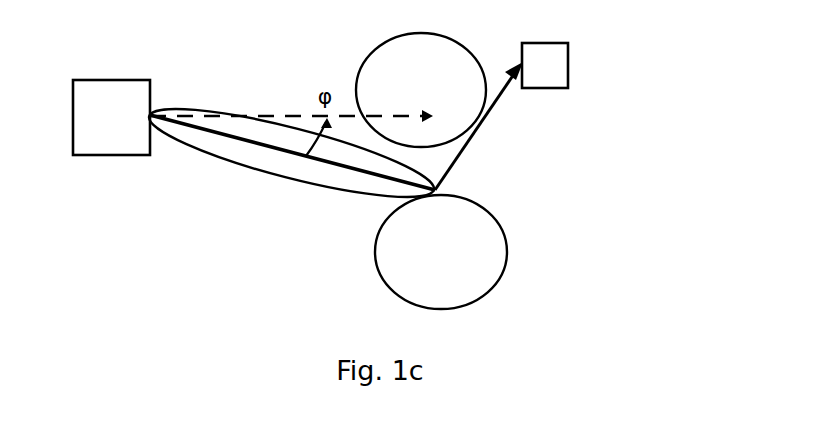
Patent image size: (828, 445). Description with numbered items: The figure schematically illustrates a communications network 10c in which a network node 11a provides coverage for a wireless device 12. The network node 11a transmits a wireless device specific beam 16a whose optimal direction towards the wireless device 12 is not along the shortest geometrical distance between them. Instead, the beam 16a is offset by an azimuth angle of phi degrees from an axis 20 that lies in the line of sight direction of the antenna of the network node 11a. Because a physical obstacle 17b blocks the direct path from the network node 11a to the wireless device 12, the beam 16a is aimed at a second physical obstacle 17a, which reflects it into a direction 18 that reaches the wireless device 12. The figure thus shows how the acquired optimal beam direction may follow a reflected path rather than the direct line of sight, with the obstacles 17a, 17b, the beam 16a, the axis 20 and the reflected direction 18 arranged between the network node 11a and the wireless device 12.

The communications network 10c is at (626, 199).
The network node 11a is at (96, 114).
The wireless device 12 is at (533, 76).
The beam 16a is at (223, 161).
The physical obstacle 17a is at (378, 255).
The physical obstacle 17b is at (357, 62).
The direction 18 is at (477, 140).
The axis 20 is at (387, 115).